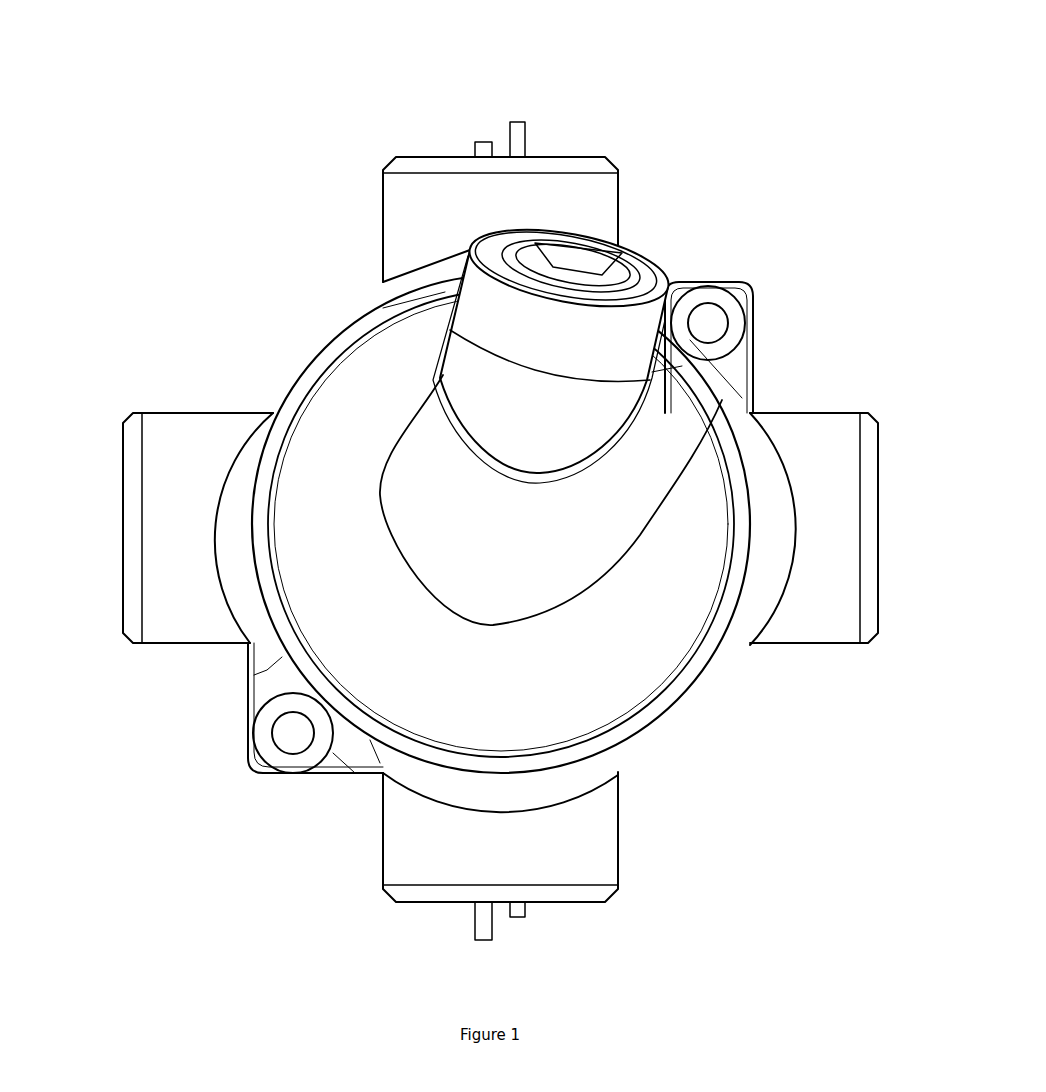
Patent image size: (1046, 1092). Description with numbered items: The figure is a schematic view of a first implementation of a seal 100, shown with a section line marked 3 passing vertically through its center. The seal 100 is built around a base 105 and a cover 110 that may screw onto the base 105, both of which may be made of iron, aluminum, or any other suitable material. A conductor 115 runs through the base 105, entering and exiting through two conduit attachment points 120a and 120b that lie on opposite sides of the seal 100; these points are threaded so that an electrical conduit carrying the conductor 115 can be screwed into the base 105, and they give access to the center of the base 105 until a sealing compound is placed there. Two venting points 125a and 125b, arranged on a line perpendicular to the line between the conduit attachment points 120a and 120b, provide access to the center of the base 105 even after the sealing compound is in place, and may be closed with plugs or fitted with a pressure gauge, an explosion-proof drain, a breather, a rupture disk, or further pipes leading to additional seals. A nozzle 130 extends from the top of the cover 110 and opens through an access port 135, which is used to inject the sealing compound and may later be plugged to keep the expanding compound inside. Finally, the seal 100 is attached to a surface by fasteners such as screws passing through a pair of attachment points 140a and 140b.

The seal 100 is at (472, 22).
The section line 3- 3 is at (515, 990).
The base 105 is at (410, 780).
The cover 110 is at (652, 680).
The conductor 115 is at (482, 142).
The conduit attachment point 120a is at (553, 160).
The conduit attachment point 120b is at (555, 903).
The venting point 125a is at (123, 492).
The venting point 125b is at (878, 477).
The nozzle 130 is at (605, 430).
The access port 135 is at (588, 258).
The attachment point 140a is at (715, 323).
The attachment point 140b is at (293, 735).